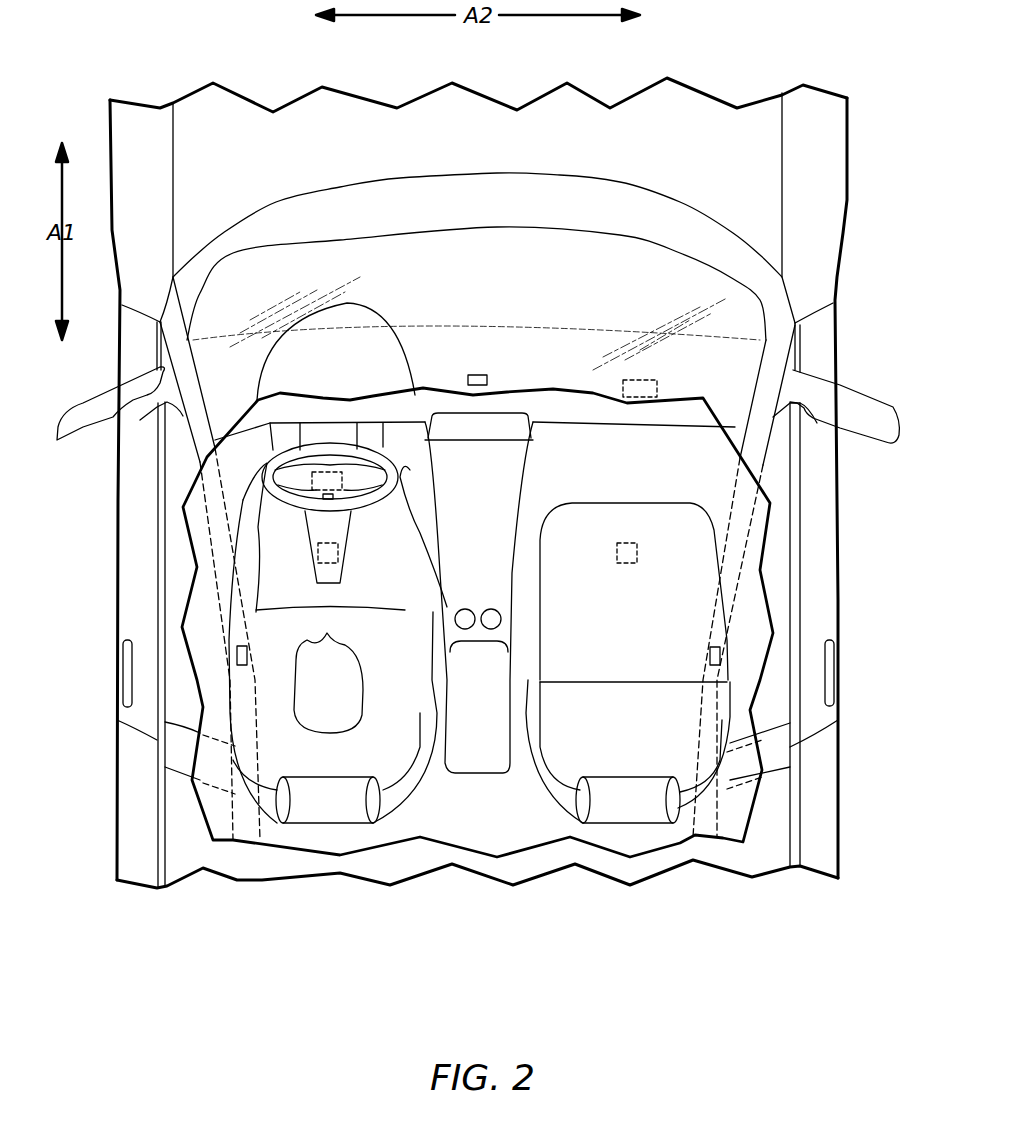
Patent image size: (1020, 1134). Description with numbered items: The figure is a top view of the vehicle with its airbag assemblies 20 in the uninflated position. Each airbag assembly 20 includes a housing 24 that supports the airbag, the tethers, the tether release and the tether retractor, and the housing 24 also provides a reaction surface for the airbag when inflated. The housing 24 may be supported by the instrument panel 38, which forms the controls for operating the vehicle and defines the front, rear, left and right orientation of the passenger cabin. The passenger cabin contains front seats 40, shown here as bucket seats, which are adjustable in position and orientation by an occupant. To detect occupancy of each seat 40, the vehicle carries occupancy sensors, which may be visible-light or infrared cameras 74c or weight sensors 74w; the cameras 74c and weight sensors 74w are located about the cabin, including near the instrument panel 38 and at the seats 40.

The airbag assembly 20 is at (352, 476).
The housing 24 is at (327, 468).
The instrument panel 38 is at (438, 402).
The front seat 40 is at (687, 540).
The cameras 74c is at (478, 375).
The weight sensors 74w is at (317, 557).